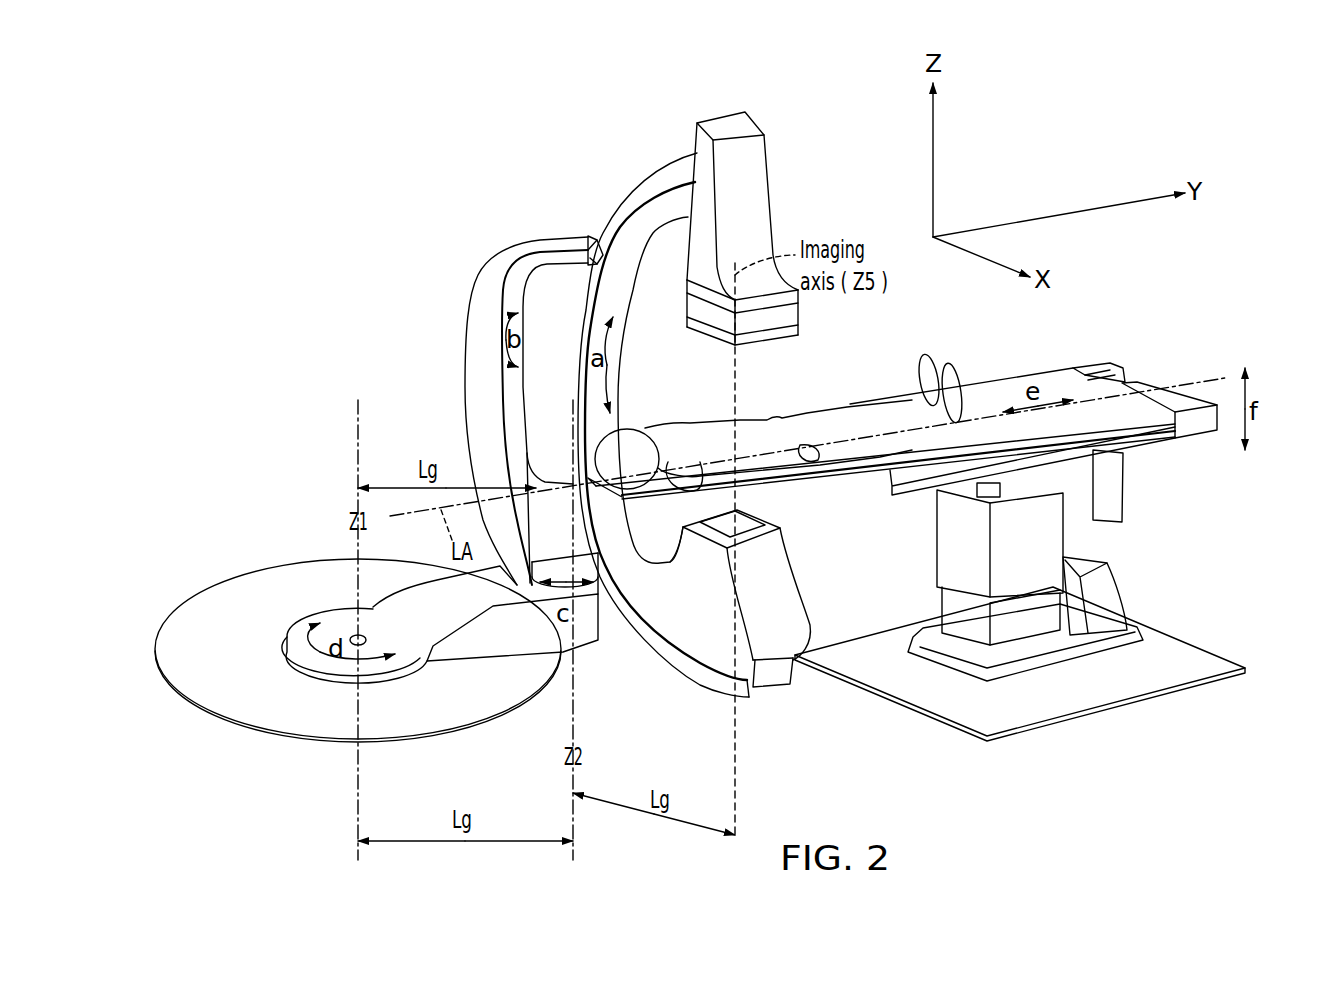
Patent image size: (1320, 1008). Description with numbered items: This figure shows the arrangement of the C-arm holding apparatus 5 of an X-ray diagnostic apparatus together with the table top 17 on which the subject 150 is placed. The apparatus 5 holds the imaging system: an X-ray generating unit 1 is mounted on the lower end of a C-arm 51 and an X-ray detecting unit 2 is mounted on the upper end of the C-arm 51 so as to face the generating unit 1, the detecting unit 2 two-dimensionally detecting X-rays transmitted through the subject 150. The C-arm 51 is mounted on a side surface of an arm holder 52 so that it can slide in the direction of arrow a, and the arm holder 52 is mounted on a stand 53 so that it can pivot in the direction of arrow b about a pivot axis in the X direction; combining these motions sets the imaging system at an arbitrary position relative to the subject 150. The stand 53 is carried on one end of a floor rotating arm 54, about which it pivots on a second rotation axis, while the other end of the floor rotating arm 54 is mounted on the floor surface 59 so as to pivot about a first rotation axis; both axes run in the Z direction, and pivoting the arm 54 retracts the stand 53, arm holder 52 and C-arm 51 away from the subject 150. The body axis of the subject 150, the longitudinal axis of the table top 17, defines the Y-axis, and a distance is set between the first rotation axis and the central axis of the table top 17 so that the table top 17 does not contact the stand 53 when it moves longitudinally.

The X-ray generating unit 1 is at (785, 565).
The X-ray detecting unit 2 is at (795, 321).
The C-arm holding apparatus 5 is at (420, 247).
The table top 17 is at (1045, 373).
The C-arm 51 is at (647, 186).
The arm holder 52 is at (566, 268).
The stand 53 is at (468, 382).
The floor rotating arm 54 is at (585, 637).
The floor surface 59 is at (306, 727).
The subject 150 is at (689, 428).